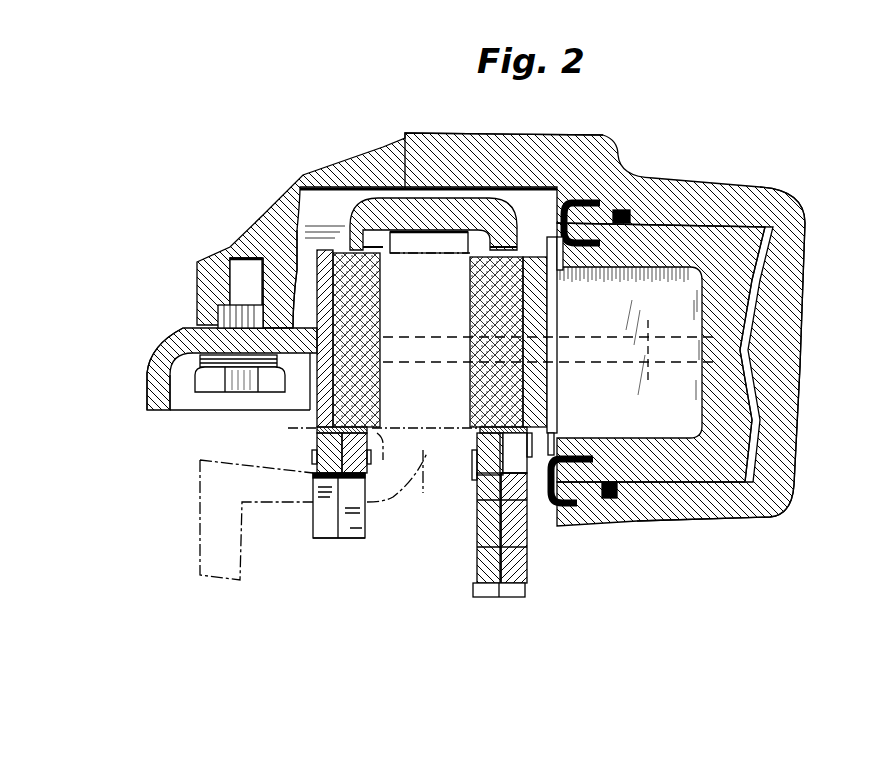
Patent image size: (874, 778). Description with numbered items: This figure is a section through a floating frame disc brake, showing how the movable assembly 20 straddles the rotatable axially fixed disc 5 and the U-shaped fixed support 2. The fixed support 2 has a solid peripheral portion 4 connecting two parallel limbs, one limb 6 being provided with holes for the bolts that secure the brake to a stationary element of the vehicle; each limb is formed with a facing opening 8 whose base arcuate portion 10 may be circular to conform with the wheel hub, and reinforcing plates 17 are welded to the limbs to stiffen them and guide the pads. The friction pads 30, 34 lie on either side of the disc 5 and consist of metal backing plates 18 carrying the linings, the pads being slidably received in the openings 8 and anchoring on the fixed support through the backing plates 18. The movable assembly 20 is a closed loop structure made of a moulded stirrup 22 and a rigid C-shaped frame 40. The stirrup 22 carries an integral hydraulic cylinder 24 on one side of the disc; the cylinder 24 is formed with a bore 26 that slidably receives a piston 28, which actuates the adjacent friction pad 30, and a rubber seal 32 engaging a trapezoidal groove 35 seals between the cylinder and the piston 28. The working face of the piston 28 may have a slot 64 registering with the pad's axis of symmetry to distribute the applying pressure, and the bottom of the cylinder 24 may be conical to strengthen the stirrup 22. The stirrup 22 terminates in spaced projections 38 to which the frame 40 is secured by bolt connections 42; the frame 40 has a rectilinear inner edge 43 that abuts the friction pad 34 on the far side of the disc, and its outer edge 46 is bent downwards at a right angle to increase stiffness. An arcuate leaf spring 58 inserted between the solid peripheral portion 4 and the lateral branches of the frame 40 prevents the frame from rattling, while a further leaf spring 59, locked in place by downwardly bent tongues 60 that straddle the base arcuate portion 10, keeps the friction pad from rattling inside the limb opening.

The fixed support 2 is at (347, 544).
The solid peripheral portion 4 is at (490, 217).
The rotatable axially fixed disc 5 is at (314, 506).
The limb 6 is at (473, 573).
The facing openings 8 is at (350, 246).
The base arcuate portion 10 is at (377, 433).
The reinforcing plates 17 is at (315, 529).
The metal backing plates 18 is at (540, 389).
The movable assembly 20 is at (614, 143).
The moulded stirrup 22 is at (425, 146).
The hydraulic cylinder 24 is at (795, 248).
The bore 26 is at (770, 200).
The piston 28 is at (680, 263).
The friction pad 30 is at (478, 316).
The rubber seal 32 is at (634, 216).
The friction pad 34 is at (378, 383).
The groove 35 is at (610, 498).
The spaced projections 38 is at (277, 213).
The rigid C-shaped frame 40 is at (182, 336).
The bolt connections 42 is at (208, 388).
The rectilinear inner edge 43 is at (312, 364).
The outer edge 46 is at (155, 388).
The arcuate leaf spring 58 is at (425, 234).
The leaf spring 59 is at (317, 431).
The downwardly bent tongues 60 is at (315, 460).
The slot 64 is at (563, 272).